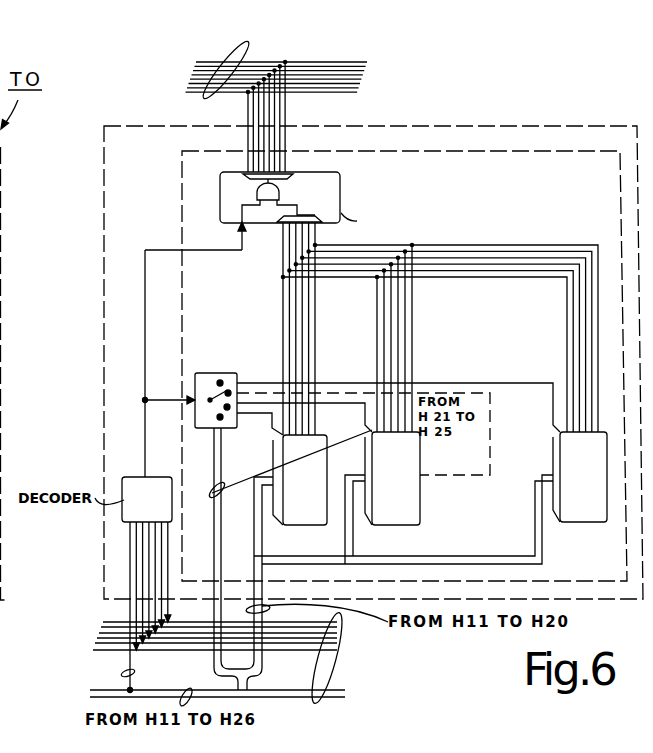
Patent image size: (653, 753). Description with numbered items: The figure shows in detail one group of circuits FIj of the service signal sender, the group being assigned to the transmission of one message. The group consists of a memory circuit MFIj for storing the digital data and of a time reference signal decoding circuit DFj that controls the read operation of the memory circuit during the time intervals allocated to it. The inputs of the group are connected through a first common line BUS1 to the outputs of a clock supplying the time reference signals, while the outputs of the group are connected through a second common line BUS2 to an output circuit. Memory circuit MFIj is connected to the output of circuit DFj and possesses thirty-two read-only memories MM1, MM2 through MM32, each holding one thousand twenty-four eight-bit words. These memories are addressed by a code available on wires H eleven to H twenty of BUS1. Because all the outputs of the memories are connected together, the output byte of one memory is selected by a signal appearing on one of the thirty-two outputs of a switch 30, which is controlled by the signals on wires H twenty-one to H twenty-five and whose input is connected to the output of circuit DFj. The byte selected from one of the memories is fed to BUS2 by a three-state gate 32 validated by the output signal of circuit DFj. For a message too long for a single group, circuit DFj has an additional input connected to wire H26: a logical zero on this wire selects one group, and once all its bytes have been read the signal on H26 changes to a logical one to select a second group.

The switch 30 is at (208, 373).
The 3-state gate 32 is at (341, 205).
The read-only memory MM1 is at (322, 525).
The read-only memory MM2 is at (413, 525).
The read-only memory MM32 is at (575, 458).
The first common line BUS1 is at (234, 669).
The second common line BUS2 is at (277, 100).
The wire H26 is at (155, 607).
The time reference signal decoding circuit DFj is at (130, 477).
The memory circuit MFIj is at (371, 366).
The group of circuits FIj is at (600, 112).